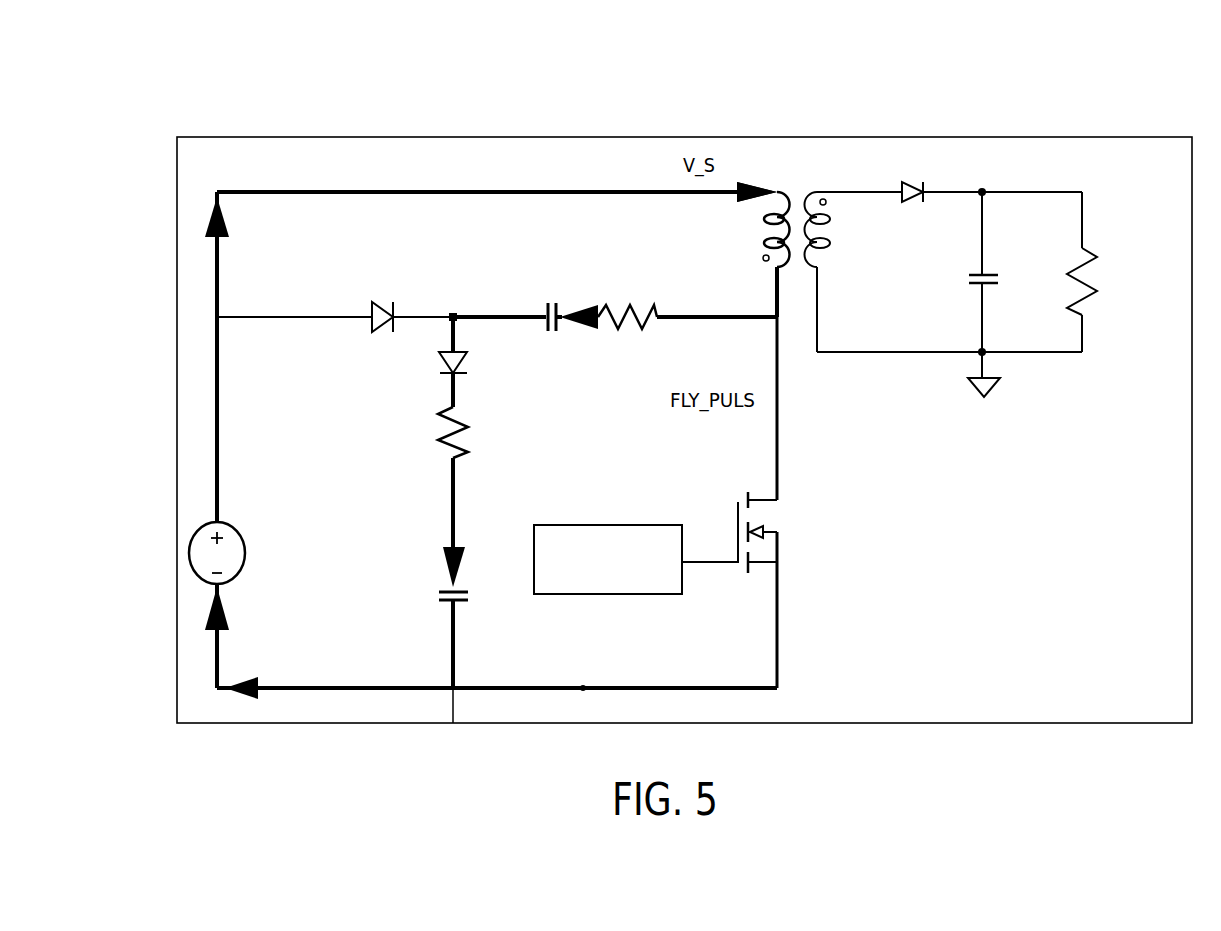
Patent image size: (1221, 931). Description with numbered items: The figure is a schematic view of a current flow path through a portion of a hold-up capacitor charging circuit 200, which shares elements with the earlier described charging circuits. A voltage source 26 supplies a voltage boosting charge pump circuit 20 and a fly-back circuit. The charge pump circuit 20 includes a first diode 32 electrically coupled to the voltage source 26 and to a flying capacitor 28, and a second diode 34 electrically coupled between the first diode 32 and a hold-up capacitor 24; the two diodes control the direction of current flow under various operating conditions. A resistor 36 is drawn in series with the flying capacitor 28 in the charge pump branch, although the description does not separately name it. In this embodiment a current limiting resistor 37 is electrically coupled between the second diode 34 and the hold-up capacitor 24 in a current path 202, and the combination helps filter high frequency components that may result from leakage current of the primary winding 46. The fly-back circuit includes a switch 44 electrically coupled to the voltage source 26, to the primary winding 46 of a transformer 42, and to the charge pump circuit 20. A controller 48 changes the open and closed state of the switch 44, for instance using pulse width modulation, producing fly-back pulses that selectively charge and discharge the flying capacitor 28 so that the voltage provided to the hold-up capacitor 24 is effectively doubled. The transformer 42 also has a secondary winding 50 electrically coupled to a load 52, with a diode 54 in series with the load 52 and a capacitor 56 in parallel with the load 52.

The hold-up capacitor charging circuit 200 is at (482, 118).
The voltage boosting charge pump circuit 20 is at (434, 283).
The transformer 42 is at (759, 158).
The diode 54 is at (913, 140).
The first diode 32 is at (372, 312).
The flying capacitor 28 is at (530, 278).
The resistor R1 36 is at (620, 278).
The primary winding 46 is at (764, 257).
The secondary winding 50 is at (824, 243).
The load 52 is at (1079, 270).
The capacitor 56 is at (985, 285).
The second diode 34 is at (462, 360).
The current limiting resistor 37 is at (465, 436).
The controller 48 is at (597, 524).
The switch 44 is at (737, 515).
The voltage source 26 is at (215, 520).
The hold-up capacitor 24 is at (450, 612).
The current path 202 is at (343, 692).